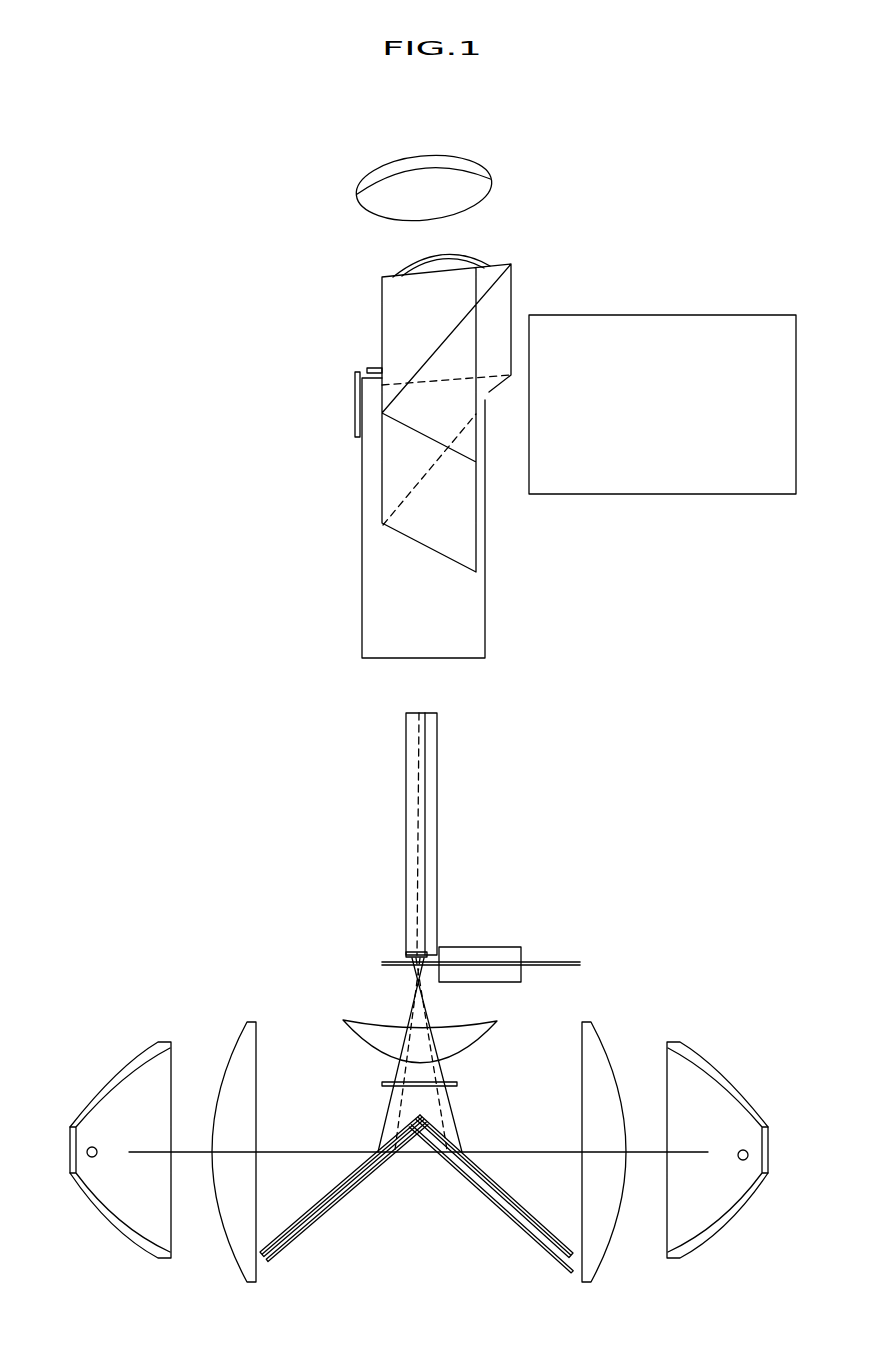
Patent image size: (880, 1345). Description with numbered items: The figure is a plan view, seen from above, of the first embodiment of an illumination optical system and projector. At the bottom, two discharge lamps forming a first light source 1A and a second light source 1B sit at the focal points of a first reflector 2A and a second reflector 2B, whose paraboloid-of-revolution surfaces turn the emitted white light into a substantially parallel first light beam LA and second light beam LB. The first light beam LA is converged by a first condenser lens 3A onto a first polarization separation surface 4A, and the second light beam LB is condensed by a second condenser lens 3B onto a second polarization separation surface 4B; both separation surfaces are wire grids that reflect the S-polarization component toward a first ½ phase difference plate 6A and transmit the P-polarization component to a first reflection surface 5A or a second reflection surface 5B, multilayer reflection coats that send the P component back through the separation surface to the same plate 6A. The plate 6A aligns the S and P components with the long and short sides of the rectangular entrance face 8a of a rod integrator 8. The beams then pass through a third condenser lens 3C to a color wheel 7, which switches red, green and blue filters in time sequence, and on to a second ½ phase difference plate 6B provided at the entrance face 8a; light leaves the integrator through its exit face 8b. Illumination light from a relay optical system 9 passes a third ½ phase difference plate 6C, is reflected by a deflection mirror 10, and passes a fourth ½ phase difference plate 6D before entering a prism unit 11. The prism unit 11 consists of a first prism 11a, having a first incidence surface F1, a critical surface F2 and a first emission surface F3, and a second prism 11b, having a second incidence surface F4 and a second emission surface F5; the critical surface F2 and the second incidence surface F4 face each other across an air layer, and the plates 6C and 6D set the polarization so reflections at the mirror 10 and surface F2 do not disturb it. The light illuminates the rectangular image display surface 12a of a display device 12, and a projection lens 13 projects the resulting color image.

The deflection mirror 10 is at (493, 174).
The fourth ½ phase difference plate 6D is at (426, 263).
The prism unit 11 is at (533, 272).
The first prism 11a is at (383, 313).
The second prism 11b is at (412, 542).
The first incidence surface F1 is at (393, 275).
The critical surface F2 is at (492, 393).
The first emission surface F3 is at (383, 330).
The second incidence surface F4 is at (460, 318).
The second emission surface F5 is at (477, 441).
The third ½ phase difference plate 6C is at (367, 369).
The display device 12 is at (355, 421).
The image display surface 12a is at (362, 436).
The relay optical system 9 is at (428, 631).
The projection lens 13 is at (675, 415).
The rod integrator 8 is at (406, 826).
The entrance face 8a is at (440, 950).
The exit face 8b is at (430, 714).
The second ½ phase difference plate 6B is at (406, 955).
The color wheel 7 is at (580, 963).
The third condenser lens 3C is at (358, 1035).
The first ½ phase difference plate 6A is at (382, 1085).
The first polarization separation surface 4A is at (355, 1170).
The second polarization separation surface 4B is at (487, 1168).
The first reflection surface 5A is at (320, 1203).
The second reflection surface 5B is at (517, 1207).
The first reflector 2A is at (135, 1058).
The second reflector 2B is at (703, 1058).
The first light source 1A is at (93, 1146).
The second light source 1B is at (744, 1149).
The first condenser lens 3A is at (222, 1050).
The second condenser lens 3B is at (615, 1050).
The first light beam LA is at (195, 1153).
The second light beam LB is at (651, 1153).